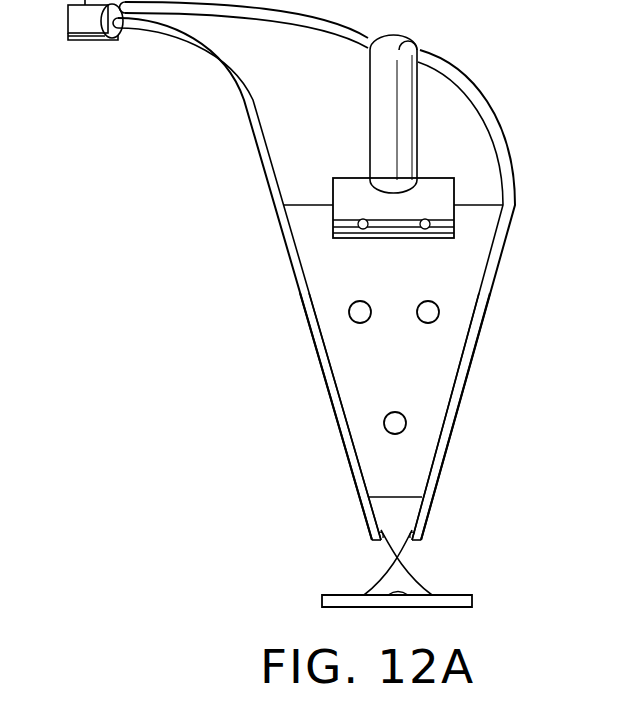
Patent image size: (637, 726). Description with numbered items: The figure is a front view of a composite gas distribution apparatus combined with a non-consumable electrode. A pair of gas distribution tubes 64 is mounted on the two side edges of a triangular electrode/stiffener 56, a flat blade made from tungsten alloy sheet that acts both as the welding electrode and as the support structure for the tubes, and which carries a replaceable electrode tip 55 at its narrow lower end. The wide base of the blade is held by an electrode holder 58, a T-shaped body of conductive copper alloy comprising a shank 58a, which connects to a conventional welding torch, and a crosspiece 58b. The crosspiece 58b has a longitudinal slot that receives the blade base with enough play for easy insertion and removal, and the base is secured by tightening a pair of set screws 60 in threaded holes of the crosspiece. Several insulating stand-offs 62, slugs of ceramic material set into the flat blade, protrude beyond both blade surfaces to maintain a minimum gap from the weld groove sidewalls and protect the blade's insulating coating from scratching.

The replaceable electrode tip 55 is at (405, 545).
The electrode/stiffener 56 is at (435, 368).
The electrode holder 58 is at (433, 157).
The shank 58a is at (383, 90).
The crosspiece 58b is at (356, 190).
The set screws 60 is at (395, 249).
The insulating stand-offs 62 is at (349, 312).
The gas distribution tubes 64 is at (352, 470).